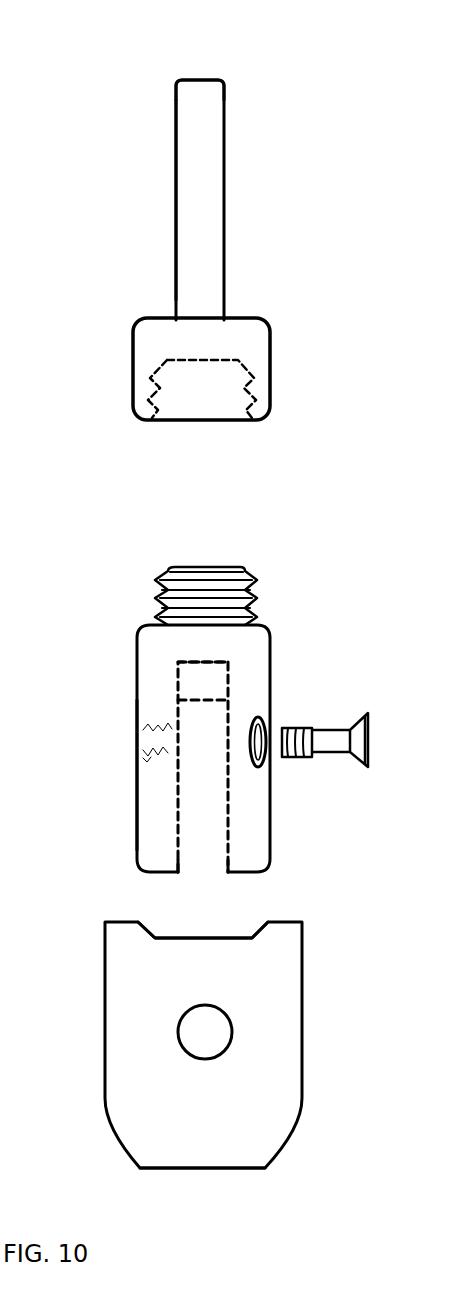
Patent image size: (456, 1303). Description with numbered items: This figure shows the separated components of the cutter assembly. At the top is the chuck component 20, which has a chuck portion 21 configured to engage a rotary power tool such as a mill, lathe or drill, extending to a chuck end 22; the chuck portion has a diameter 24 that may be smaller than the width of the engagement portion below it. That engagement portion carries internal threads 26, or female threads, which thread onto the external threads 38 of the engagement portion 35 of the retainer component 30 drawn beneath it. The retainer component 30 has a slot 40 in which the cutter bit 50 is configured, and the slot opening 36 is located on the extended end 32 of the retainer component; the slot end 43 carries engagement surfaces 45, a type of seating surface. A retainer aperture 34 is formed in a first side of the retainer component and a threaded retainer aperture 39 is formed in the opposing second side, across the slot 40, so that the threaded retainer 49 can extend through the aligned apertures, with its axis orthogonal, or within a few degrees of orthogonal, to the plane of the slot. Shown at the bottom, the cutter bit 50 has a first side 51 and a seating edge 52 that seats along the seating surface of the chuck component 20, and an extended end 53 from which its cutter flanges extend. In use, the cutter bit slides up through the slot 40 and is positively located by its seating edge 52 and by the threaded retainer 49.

The chuck component 20 is at (202, 238).
The chuck portion 21 is at (195, 178).
The chuck end 22 is at (200, 80).
The diameter 24 is at (145, 422).
The internal threads 26 is at (240, 385).
The retainer component 30 is at (155, 650).
The extended end 32 is at (155, 872).
The retainer aperture 34 is at (268, 716).
The engagement portion 35 is at (182, 581).
The slot opening 36 is at (200, 865).
The external threads 38 is at (222, 582).
The threaded retainer aperture 39 is at (153, 732).
The slot 40 is at (210, 830).
The slot end 43 is at (202, 698).
The engagement surfaces 45 is at (202, 670).
The threaded retainer 49 is at (368, 715).
The cutter bit 50 is at (278, 1080).
The first side 51 is at (220, 1035).
The seating edge 52 is at (253, 927).
The extended end 53 is at (228, 1170).